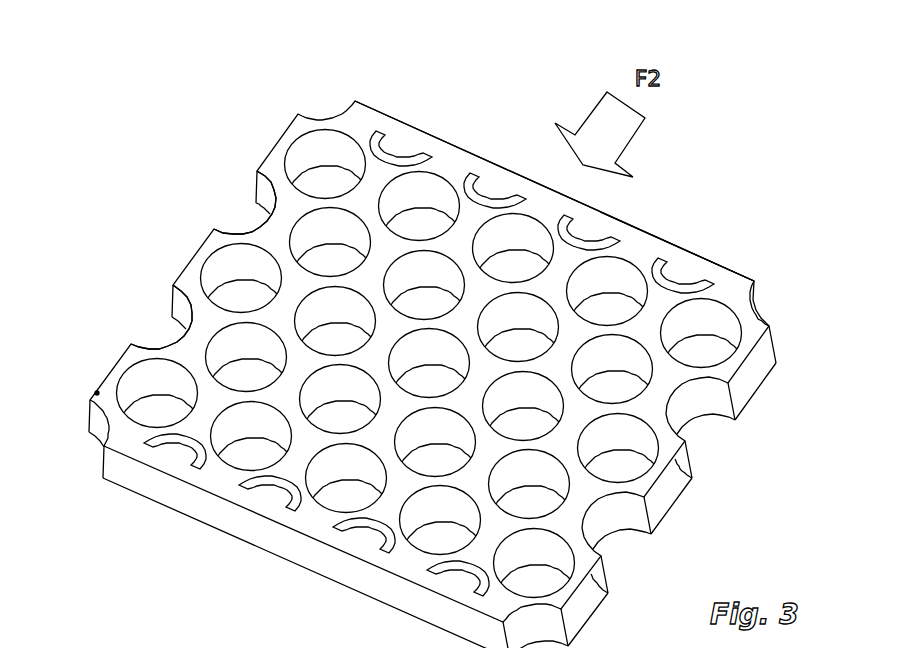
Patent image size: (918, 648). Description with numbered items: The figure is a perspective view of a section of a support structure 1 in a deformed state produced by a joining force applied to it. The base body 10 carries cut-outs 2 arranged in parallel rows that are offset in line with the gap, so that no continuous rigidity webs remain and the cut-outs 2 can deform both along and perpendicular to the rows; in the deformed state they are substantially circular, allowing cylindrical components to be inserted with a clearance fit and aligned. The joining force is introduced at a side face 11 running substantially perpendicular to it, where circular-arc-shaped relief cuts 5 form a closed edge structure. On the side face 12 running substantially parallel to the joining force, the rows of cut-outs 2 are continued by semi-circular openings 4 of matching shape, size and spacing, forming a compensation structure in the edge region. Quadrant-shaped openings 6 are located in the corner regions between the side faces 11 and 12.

The support structure 1 is at (534, 104).
The cut-outs 2 is at (495, 233).
The openings 4 is at (238, 230).
The relief cuts 5 is at (142, 445).
The quadrant-shaped openings 6 is at (88, 407).
The base body 10 is at (638, 253).
The side face 11 is at (702, 257).
The side face 12 is at (662, 502).